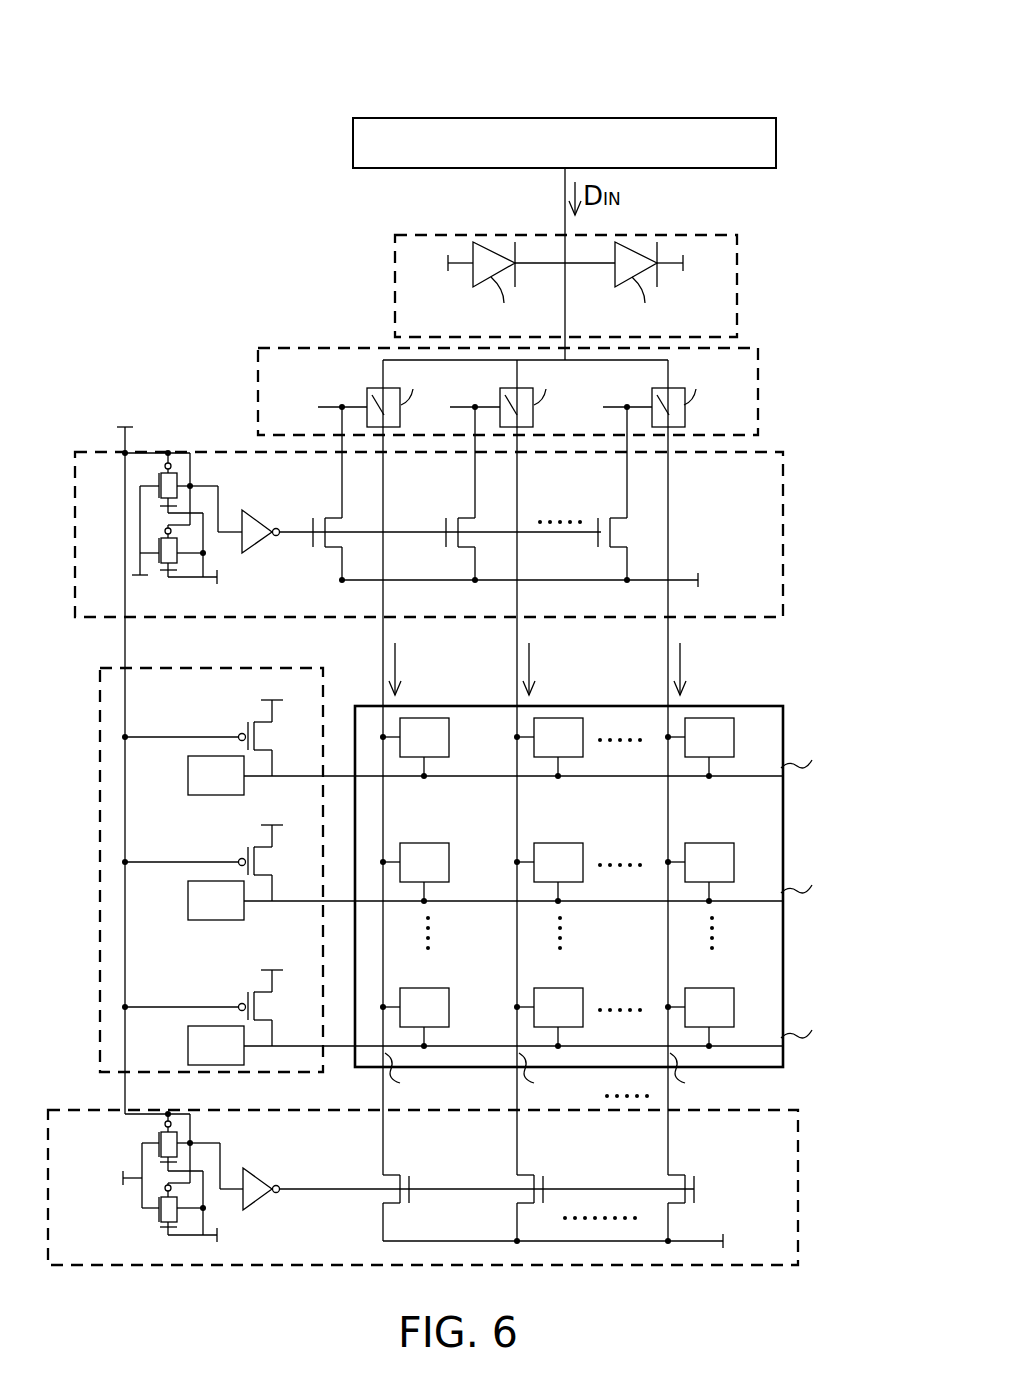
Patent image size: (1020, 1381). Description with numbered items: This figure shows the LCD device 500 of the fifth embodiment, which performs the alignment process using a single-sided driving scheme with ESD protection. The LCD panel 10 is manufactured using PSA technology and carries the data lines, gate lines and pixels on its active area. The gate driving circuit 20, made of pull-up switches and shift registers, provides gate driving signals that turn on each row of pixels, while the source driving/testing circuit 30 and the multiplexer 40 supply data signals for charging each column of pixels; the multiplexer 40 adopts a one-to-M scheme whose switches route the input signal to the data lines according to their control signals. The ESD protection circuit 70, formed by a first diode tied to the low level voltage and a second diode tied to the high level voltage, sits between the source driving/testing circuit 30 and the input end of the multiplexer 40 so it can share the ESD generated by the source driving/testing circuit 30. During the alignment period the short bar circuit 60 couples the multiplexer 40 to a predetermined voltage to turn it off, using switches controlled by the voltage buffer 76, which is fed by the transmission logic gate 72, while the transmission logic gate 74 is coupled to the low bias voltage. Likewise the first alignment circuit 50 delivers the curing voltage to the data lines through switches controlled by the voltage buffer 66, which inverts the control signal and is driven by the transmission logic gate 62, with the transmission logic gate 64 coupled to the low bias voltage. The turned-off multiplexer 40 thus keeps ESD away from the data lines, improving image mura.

The LCD device 500 is at (772, 93).
The source driving/testing circuit 30 is at (353, 141).
The ESD protection circuit 70 is at (395, 283).
The multiplexer 40 is at (258, 407).
The short bar circuit 60 is at (467, 754).
The transmission logic gate 72 is at (159, 484).
The transmission logic gate 74 is at (159, 556).
The voltage buffer 76 is at (260, 520).
The gate driving circuit 20 is at (100, 872).
The LCD panel 10 is at (771, 704).
The first alignment circuit 50 is at (459, 1187).
The transmission logic gate 62 is at (159, 1142).
The transmission logic gate 64 is at (159, 1218).
The voltage buffer 66 is at (260, 1178).